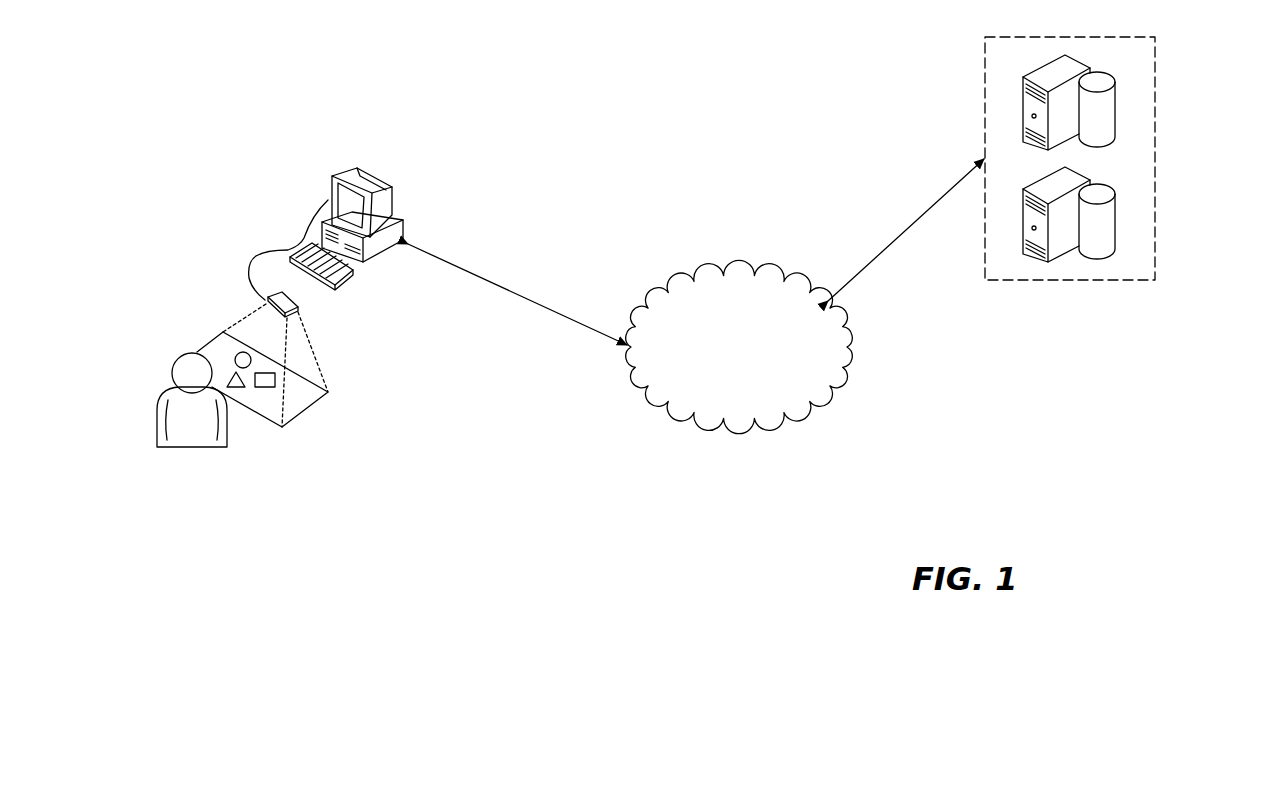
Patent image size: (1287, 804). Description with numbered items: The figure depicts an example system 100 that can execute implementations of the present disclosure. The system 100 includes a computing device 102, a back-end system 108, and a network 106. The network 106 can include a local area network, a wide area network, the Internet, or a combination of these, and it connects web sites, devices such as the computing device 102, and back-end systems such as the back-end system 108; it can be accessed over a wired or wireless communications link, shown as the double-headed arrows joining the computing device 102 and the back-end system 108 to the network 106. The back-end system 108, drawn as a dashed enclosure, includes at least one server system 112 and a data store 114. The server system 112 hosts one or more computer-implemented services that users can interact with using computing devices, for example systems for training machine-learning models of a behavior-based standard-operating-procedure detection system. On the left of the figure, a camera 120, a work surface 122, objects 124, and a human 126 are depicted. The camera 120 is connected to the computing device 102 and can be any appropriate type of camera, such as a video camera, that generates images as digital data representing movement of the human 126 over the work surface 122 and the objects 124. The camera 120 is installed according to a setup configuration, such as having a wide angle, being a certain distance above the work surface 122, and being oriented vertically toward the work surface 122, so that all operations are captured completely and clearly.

The system 100 is at (556, 93).
The computing device 102 is at (330, 185).
The network 106 is at (756, 273).
The back-end system 108 is at (1156, 158).
The server system 112 is at (1023, 92).
The data store 114 is at (1117, 110).
The camera 120 is at (265, 303).
The work surface 122 is at (312, 408).
The objects 124 is at (265, 387).
The human 126 is at (172, 367).